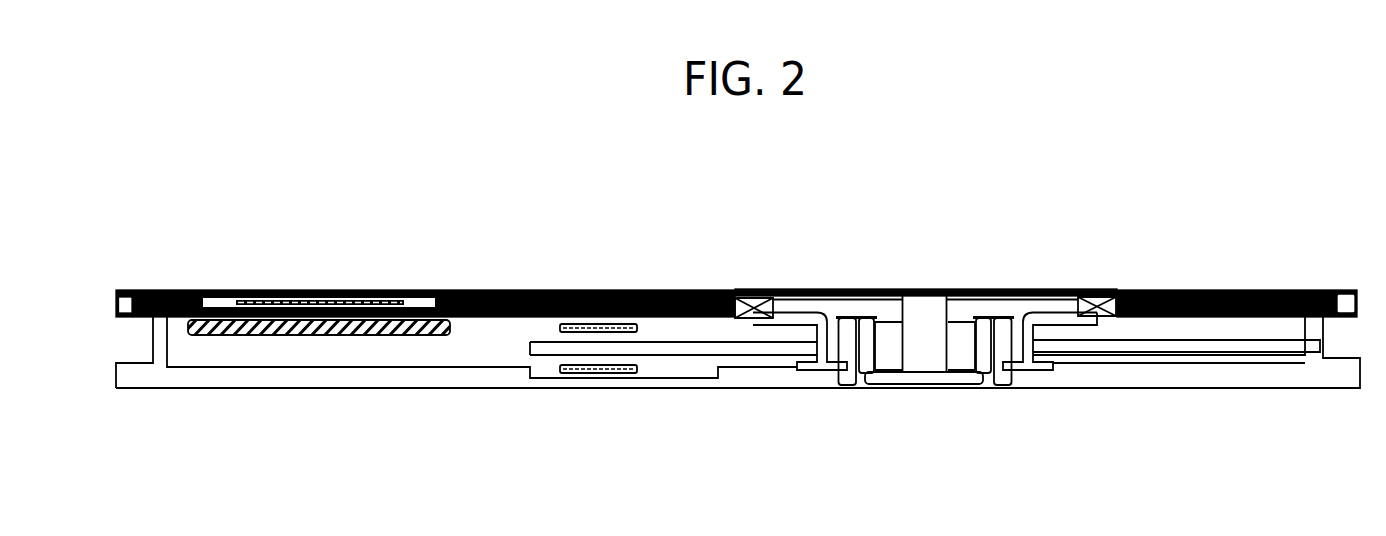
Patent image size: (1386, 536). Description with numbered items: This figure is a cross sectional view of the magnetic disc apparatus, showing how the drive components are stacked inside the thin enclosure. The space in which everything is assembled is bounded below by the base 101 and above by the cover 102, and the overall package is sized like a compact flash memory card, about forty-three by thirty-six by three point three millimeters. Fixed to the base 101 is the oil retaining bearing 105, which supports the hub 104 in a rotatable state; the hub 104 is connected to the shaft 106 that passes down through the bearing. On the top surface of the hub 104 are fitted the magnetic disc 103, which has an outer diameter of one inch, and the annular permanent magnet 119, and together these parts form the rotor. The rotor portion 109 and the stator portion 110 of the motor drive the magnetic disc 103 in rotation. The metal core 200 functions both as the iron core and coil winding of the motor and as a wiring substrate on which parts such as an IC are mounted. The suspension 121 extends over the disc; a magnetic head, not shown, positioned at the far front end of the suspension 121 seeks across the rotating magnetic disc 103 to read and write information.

The base 101 is at (1276, 372).
The cover 102 is at (296, 290).
The magnetic disc 103 is at (1125, 347).
The hub 104 is at (825, 312).
The oil retaining bearing 105 is at (962, 354).
The shaft 106 is at (918, 356).
The rotor portion 109 is at (929, 289).
The stator portion 110 is at (1131, 289).
The annular permanent magnet 119 is at (752, 297).
The suspension 121 is at (588, 373).
The metal core 200 is at (1261, 289).